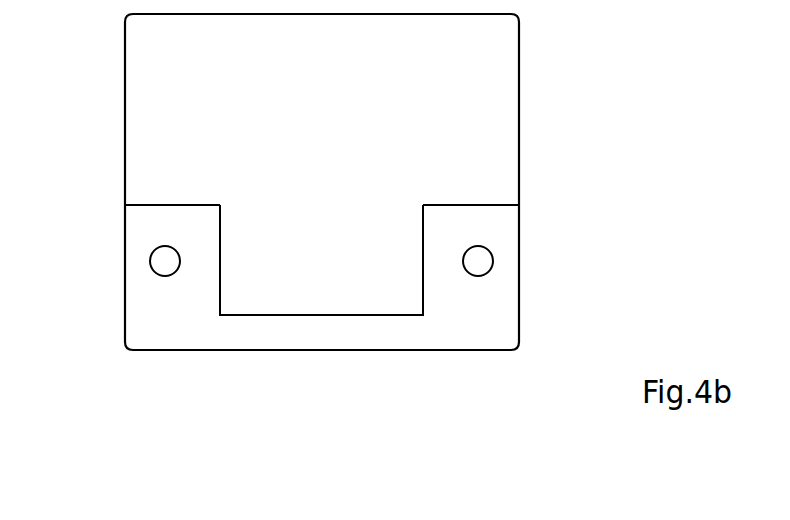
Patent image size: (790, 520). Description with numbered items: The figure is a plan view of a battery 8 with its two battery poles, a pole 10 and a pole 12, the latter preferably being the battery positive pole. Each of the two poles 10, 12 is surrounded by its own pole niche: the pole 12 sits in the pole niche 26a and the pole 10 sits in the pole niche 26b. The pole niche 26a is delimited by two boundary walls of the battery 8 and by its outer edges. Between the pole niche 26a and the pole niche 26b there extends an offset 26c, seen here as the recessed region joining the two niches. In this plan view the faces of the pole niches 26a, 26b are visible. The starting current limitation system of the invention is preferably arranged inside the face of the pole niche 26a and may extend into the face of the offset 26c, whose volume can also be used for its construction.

The battery 8 is at (553, 94).
The pole 10 is at (158, 262).
The pole 12 is at (484, 262).
The pole niche 26a is at (492, 228).
The pole niche 26b is at (150, 228).
The offset 26c is at (316, 343).